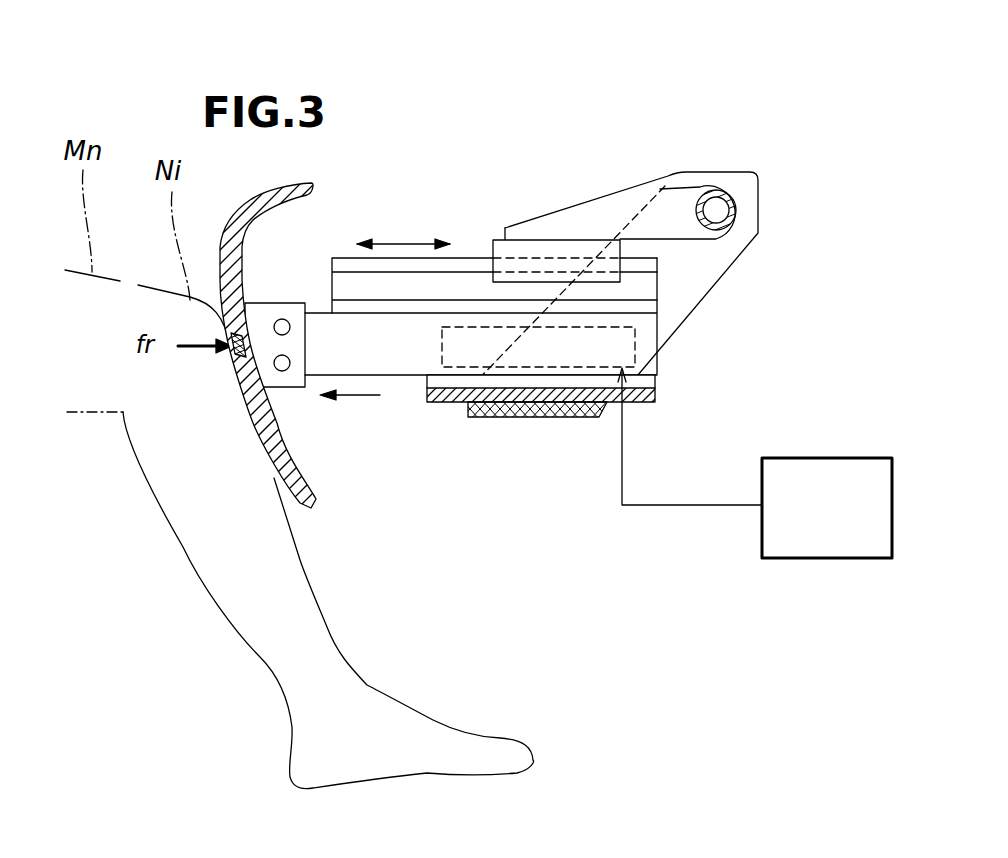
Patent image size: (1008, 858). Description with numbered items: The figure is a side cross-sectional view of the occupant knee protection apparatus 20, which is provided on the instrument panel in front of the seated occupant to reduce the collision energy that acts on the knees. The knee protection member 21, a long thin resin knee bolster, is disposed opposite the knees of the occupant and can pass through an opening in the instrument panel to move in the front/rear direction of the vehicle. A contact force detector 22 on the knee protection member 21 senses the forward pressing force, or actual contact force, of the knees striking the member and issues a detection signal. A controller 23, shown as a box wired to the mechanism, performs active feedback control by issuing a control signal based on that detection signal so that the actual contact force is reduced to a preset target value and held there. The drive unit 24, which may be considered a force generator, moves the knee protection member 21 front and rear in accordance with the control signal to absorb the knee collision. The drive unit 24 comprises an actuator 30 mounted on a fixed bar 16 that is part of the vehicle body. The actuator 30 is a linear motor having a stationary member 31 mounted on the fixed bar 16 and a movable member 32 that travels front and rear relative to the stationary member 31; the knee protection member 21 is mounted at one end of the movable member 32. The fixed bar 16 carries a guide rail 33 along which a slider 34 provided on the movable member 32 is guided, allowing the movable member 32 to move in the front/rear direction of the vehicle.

The fixed bar 16 is at (727, 192).
The occupant knee protection apparatus 20 is at (408, 143).
The knee protection member 21 is at (253, 412).
The contact force detector 22 is at (228, 357).
The controller 23 is at (825, 552).
The drive unit 24 is at (530, 435).
The actuator 30 is at (481, 408).
The stationary member 31 is at (458, 368).
The movable member 32 is at (392, 350).
The guide rail 33 is at (538, 254).
The slider 34 is at (457, 283).